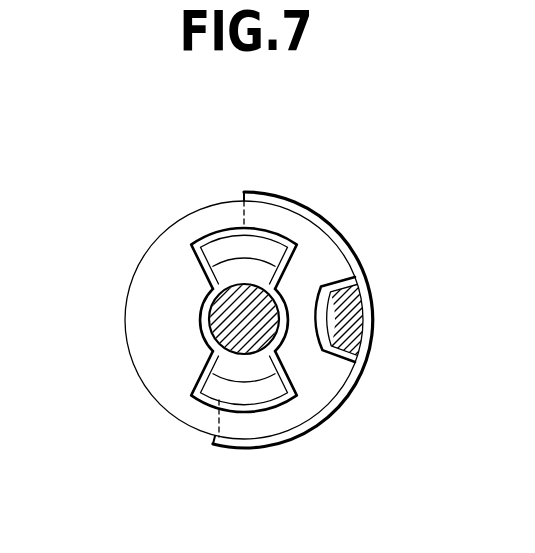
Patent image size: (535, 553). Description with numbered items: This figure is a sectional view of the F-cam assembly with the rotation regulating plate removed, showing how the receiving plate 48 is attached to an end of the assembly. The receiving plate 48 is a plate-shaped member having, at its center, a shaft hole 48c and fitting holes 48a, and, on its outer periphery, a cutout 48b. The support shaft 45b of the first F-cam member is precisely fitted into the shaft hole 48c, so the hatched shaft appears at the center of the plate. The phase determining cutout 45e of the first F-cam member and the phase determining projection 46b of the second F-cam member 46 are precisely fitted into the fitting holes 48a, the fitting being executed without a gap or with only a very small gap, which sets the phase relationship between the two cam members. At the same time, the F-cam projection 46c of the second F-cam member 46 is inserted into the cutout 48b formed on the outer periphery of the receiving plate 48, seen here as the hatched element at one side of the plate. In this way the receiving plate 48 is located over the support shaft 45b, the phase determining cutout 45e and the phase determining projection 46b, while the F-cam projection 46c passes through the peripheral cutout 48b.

The support shaft 45b is at (225, 310).
The phase determining cutout 45e is at (225, 275).
The second F-cam member 46 is at (340, 403).
The phase determining projection 46b is at (193, 251).
The F-cam projection 46c is at (348, 302).
The receiving plate 48 is at (131, 281).
The fitting holes 48a is at (283, 295).
The cutout 48b is at (357, 382).
The shaft hole 48c is at (288, 263).